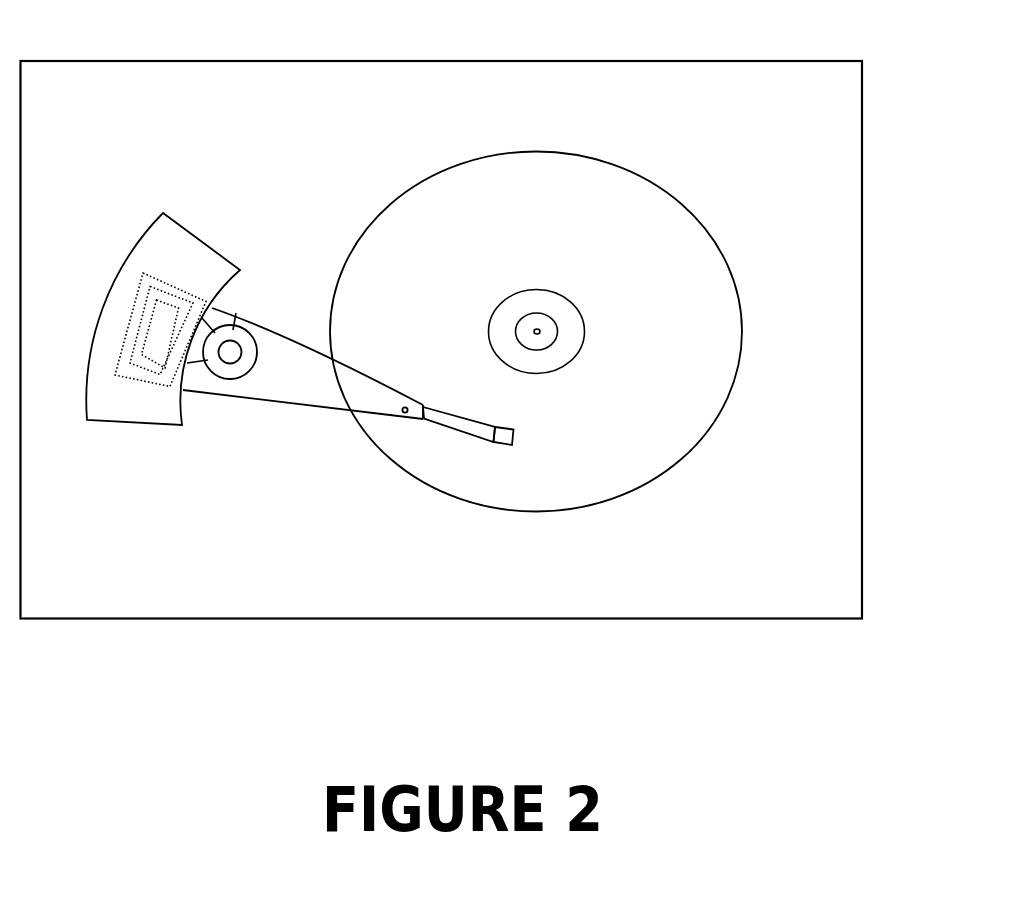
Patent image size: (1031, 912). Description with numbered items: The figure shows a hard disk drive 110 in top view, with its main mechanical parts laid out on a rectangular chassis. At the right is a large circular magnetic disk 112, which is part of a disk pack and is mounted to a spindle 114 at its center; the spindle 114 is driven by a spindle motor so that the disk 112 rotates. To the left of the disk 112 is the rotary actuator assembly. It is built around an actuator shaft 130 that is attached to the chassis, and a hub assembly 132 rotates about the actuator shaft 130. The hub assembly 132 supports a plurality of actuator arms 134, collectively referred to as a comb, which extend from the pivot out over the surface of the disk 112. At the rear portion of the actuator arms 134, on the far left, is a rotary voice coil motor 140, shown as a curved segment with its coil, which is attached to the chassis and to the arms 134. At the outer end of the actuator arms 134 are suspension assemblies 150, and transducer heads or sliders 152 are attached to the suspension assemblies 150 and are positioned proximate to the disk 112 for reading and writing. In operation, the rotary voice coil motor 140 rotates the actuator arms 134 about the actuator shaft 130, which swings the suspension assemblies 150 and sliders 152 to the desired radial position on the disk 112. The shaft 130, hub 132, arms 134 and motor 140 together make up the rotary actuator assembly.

The hard disk drive 110 is at (912, 108).
The magnetic disk 112 is at (561, 202).
The spindle 114 is at (558, 332).
The actuator shaft 130 is at (215, 368).
The hub assembly 132 is at (303, 350).
The actuator arms 134 is at (358, 379).
The rotary voice coil motor 140 is at (173, 248).
The suspension assemblies 150 is at (443, 423).
The transducer heads or sliders 152 is at (515, 442).